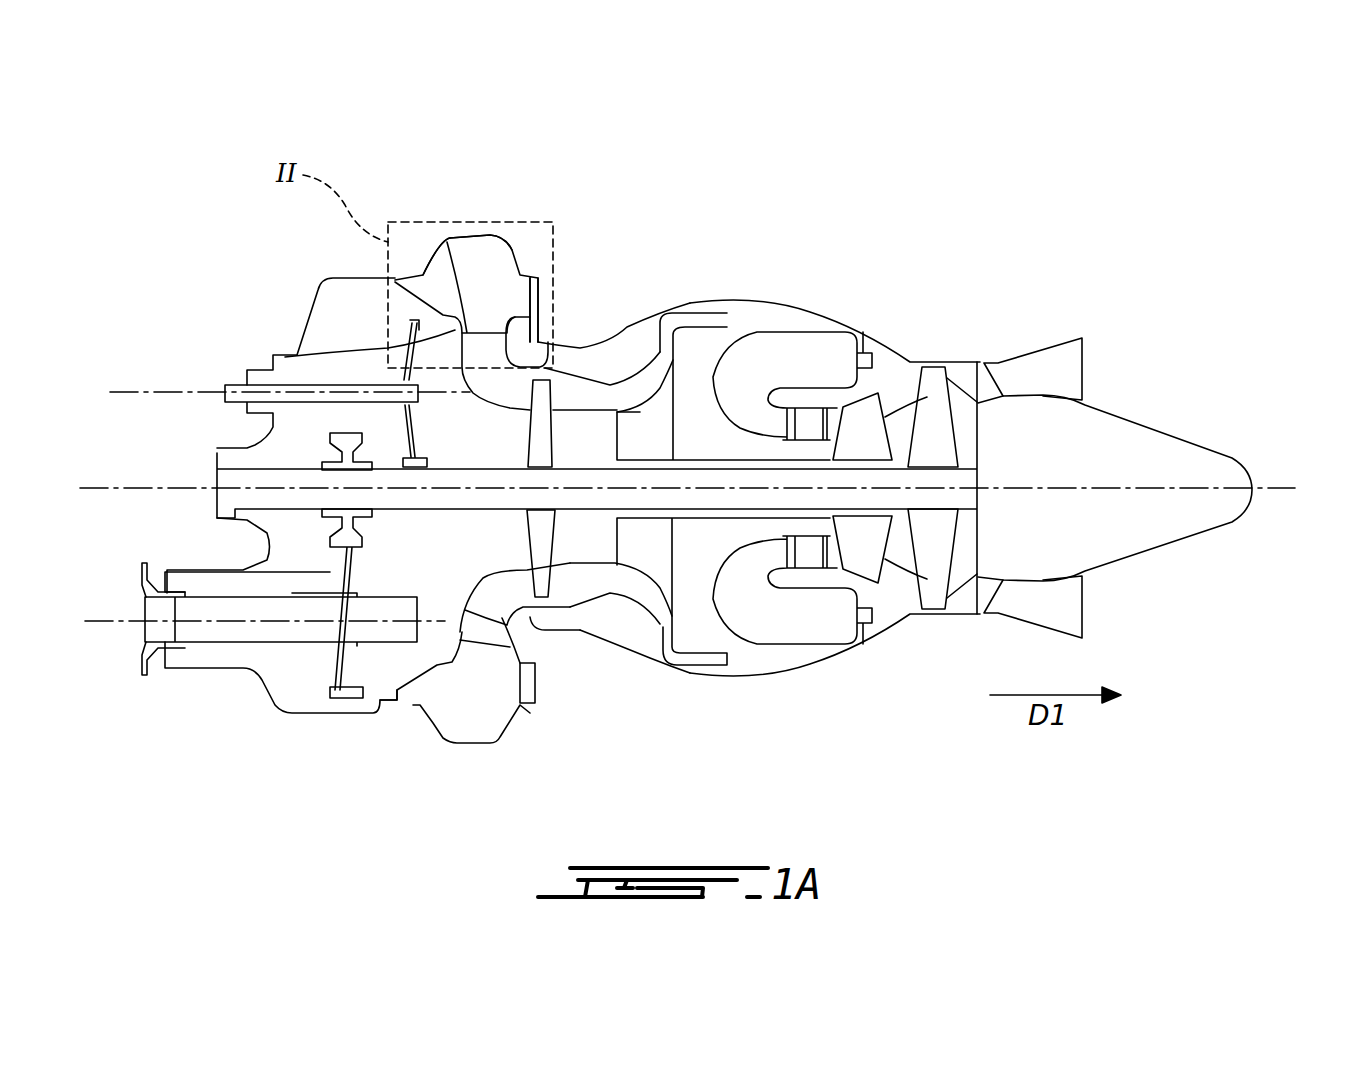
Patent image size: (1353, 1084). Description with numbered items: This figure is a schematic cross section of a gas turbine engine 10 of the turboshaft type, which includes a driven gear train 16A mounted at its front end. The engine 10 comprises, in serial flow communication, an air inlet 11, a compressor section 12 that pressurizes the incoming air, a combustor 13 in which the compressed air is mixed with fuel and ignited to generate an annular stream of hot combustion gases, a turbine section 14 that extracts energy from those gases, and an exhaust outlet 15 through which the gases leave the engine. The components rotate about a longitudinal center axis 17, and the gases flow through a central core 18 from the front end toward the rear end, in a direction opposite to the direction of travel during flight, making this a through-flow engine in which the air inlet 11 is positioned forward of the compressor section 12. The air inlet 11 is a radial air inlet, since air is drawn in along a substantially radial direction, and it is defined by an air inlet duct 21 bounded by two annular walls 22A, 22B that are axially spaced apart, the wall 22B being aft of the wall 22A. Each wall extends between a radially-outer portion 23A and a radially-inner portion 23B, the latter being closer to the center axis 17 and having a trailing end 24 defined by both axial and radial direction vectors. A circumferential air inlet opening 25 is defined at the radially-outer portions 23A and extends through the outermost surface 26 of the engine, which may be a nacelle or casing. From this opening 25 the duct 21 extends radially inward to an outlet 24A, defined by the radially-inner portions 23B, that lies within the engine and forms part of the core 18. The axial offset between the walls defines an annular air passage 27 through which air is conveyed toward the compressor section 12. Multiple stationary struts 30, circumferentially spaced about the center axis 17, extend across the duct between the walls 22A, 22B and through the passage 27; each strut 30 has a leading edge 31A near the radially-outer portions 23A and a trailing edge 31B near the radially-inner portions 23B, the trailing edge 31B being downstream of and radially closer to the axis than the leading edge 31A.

The gas turbine engine 10 is at (1060, 244).
The air inlet 11 is at (410, 245).
The compressor section 12 is at (590, 625).
The combustor 13 is at (805, 360).
The turbine section 14 is at (850, 557).
The exhaust outlet 15 is at (1102, 372).
The driven gear train 16A is at (208, 630).
The longitudinal center axis 17 is at (1300, 480).
The central core 18 is at (894, 558).
The air inlet duct 21 is at (395, 300).
The annular wall 22A is at (285, 357).
The annular wall 22B is at (550, 345).
The radially-outer portion 23A is at (380, 278).
The radially-inner portion 23B is at (485, 418).
The trailing end 24 is at (480, 528).
The outlet of the inlet duct 24A is at (507, 424).
The air inlet opening 25 is at (490, 317).
The outermost surface 26 is at (525, 283).
The annular air passage 27 is at (493, 388).
The air inlet strut 30 is at (438, 377).
The leading edge 31A is at (440, 237).
The trailing edge 31B is at (493, 362).